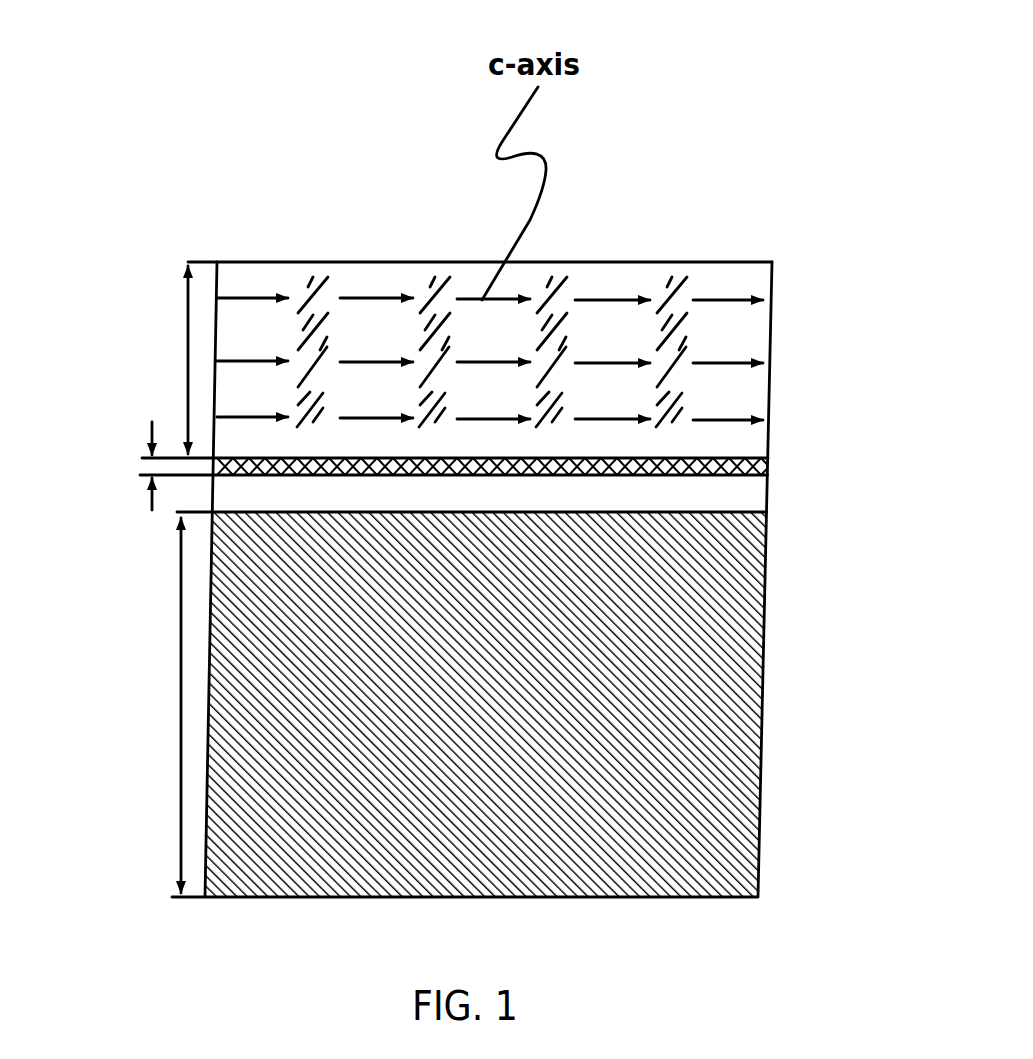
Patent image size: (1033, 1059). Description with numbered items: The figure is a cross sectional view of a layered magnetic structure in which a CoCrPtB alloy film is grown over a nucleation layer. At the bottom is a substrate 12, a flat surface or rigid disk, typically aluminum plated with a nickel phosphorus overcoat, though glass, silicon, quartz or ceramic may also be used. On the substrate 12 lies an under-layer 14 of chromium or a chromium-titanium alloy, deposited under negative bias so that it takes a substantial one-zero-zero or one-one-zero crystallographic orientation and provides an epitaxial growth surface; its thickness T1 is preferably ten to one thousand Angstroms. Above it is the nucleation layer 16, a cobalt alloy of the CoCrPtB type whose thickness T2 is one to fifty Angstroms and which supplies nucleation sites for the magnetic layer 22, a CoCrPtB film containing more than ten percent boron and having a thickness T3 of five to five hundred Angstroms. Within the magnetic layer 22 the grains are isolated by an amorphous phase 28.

The substrate 12 is at (762, 747).
The under-layer 14 is at (767, 500).
The nucleation layer 16 is at (768, 467).
The magnetic layer 22 is at (360, 263).
The amorphous phase 28 is at (680, 290).
The thickness of the under-layer T1 is at (182, 480).
The thickness of the nucleation layer T2 is at (150, 506).
The thickness of the magnetic layer T3 is at (186, 362).